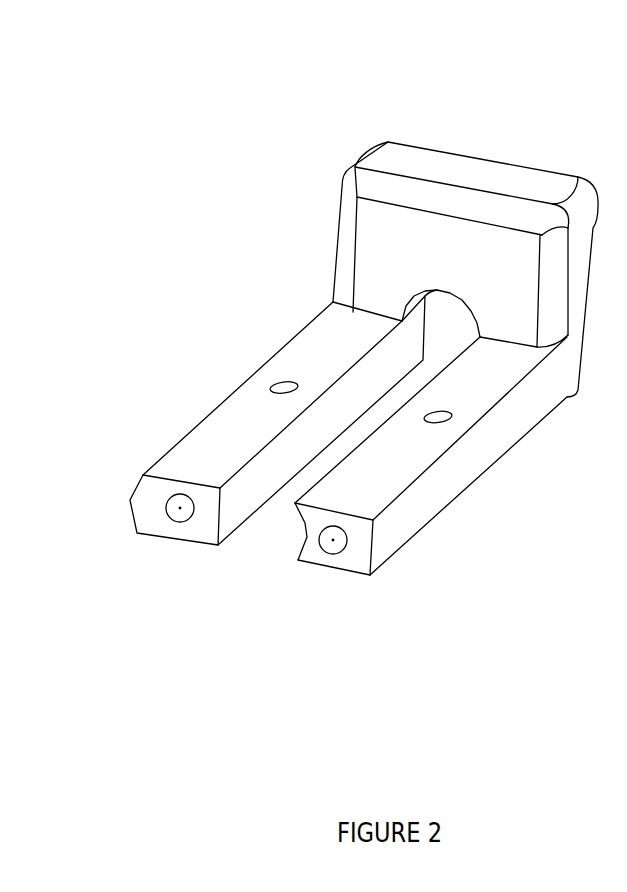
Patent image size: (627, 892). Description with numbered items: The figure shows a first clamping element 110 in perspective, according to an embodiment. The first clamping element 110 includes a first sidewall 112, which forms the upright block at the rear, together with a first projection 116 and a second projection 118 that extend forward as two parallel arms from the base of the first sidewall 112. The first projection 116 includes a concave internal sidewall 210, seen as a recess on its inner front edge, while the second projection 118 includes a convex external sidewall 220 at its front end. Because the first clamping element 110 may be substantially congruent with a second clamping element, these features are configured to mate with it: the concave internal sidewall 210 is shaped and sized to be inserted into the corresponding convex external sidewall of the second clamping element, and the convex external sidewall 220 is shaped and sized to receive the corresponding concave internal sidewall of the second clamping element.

The first clamping element 110 is at (162, 54).
The first sidewall 112 is at (462, 178).
The first projection 116 is at (360, 570).
The second projection 118 is at (200, 526).
The concave internal sidewall 210 is at (297, 557).
The convex external sidewall 220 is at (140, 488).